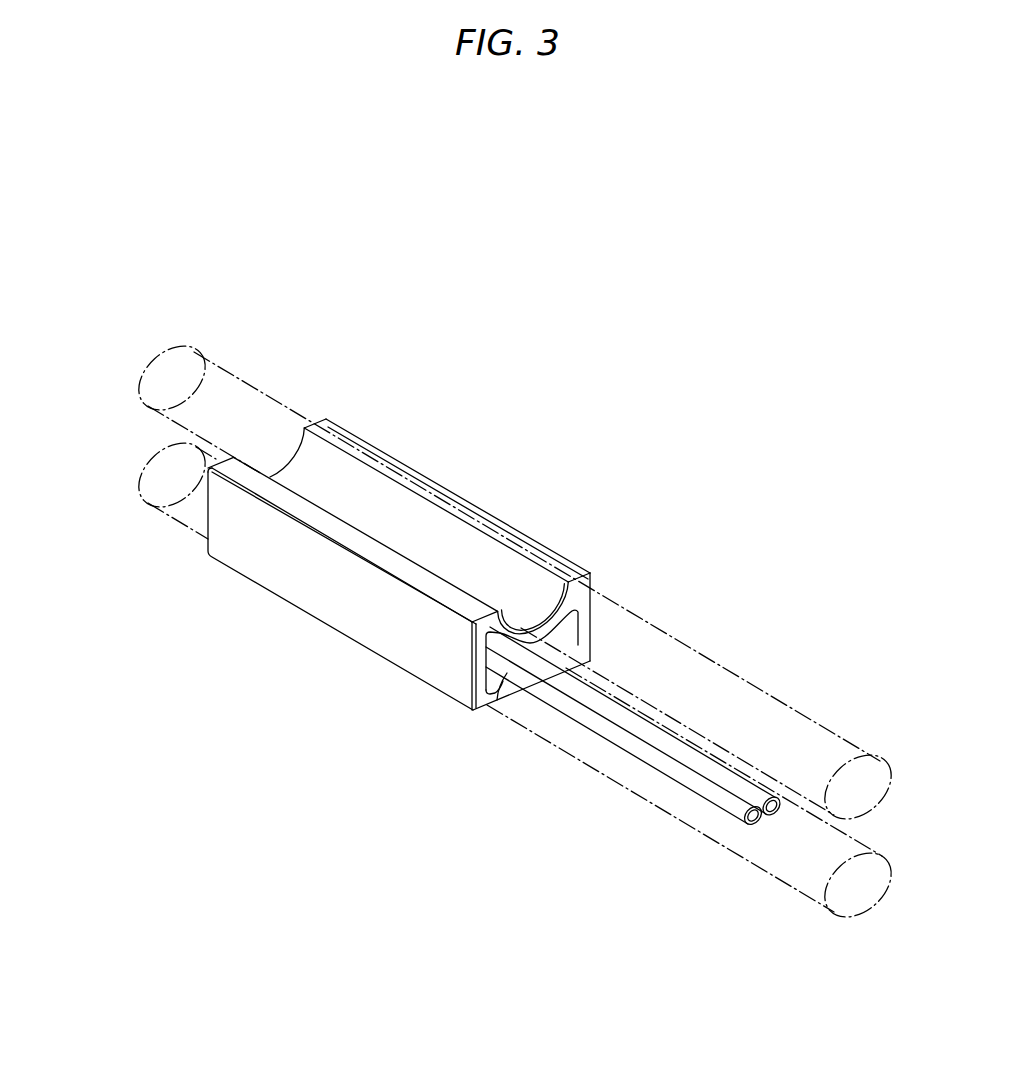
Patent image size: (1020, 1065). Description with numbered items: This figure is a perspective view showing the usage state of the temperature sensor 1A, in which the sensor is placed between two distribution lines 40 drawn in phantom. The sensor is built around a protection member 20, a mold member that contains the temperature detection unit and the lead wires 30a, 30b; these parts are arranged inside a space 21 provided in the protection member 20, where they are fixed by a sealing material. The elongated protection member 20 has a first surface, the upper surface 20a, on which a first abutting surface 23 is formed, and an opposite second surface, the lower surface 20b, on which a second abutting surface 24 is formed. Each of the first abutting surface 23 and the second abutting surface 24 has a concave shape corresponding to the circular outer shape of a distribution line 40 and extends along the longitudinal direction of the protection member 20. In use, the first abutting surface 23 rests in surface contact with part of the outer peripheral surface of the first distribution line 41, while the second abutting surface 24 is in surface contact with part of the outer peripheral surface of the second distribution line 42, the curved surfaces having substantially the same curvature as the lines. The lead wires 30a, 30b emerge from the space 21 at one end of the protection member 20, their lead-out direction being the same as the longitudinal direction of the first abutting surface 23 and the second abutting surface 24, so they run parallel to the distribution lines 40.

The temperature sensor 1A is at (204, 228).
The protection member 20 is at (440, 584).
The upper surface 20a is at (400, 446).
The lower surface 20b is at (466, 718).
The space 21 is at (580, 630).
The first abutting surface 23 is at (533, 578).
The second abutting surface 24 is at (510, 697).
The lead wire 30a is at (750, 778).
The lead wire 30b is at (727, 822).
The distribution line 40 is at (465, 596).
The first distribution line 41 is at (247, 382).
The second distribution line 42 is at (193, 528).